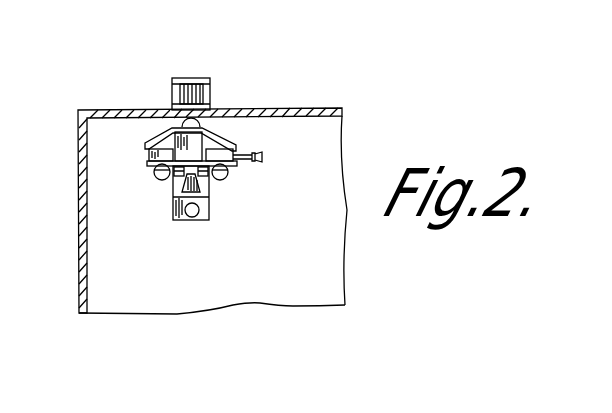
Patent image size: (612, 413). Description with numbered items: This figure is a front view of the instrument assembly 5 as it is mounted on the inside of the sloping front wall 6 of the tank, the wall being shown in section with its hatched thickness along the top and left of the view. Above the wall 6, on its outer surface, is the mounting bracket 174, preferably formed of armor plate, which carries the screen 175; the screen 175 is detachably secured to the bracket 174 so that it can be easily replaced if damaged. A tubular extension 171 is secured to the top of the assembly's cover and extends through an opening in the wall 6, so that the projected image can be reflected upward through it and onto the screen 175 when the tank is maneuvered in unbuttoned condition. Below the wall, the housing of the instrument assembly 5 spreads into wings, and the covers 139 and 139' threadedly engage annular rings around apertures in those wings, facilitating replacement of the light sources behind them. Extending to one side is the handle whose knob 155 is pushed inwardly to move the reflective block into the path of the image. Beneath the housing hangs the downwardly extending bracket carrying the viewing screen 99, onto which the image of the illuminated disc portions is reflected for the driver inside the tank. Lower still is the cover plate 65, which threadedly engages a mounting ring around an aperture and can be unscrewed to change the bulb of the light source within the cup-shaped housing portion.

The sloping front wall 6 is at (88, 109).
The mounting bracket 174 is at (173, 90).
The screen 175 is at (206, 91).
The tubular extension 171 is at (205, 124).
The instrument assembly 5 is at (138, 161).
The knob 155 is at (264, 158).
The cover 139 is at (145, 186).
The cover 139' is at (241, 185).
The viewing screen 99 is at (190, 184).
The cover plate 65 is at (207, 211).